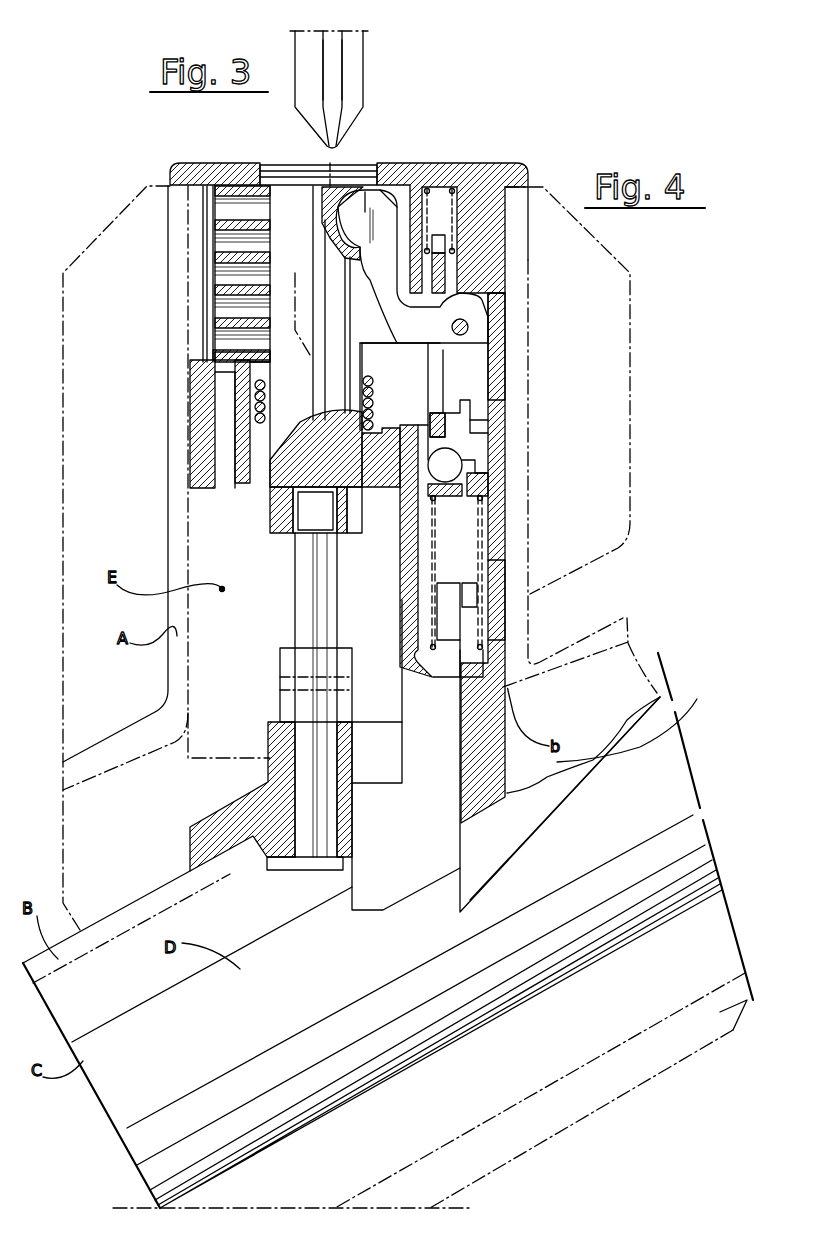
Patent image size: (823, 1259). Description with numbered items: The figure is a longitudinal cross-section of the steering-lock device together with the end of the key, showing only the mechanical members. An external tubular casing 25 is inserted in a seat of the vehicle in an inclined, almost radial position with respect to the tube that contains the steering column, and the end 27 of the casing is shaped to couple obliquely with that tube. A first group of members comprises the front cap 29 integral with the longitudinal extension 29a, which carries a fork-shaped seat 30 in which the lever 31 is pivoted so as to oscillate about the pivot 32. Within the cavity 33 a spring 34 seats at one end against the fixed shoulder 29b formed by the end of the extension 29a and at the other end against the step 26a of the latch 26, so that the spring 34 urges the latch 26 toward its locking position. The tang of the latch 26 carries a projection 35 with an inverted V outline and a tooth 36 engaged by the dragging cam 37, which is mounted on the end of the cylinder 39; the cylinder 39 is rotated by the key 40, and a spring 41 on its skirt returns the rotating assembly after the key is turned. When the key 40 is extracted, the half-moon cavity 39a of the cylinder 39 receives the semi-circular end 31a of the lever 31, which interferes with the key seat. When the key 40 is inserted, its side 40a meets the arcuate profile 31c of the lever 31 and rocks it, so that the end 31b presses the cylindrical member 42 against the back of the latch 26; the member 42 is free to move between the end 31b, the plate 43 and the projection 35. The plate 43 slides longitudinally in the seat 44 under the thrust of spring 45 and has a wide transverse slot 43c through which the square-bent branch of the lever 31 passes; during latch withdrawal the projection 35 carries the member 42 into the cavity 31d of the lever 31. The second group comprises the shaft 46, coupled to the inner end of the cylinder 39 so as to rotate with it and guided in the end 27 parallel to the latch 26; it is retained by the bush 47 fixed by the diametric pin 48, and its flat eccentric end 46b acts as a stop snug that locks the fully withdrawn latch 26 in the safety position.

In FIG. 3, the external tubular casing 25 is at (190, 370).
In FIG. 4, the latch 26 is at (440, 857).
In FIG. 4, the step 26a is at (473, 660).
In FIG. 4, the end of casing 27 is at (610, 705).
In FIG. 3, the front cap 29 is at (170, 173).
In FIG. 3, the longitudinal extension 29a is at (500, 302).
In FIG. 3, the fixed shoulder 29b is at (460, 498).
In FIG. 3, the fork-shaped seat 30 is at (480, 486).
In FIG. 3, the lever 31 is at (470, 318).
In FIG. 3, the semi-circular end of lever 31a is at (392, 200).
In FIG. 3, the end of lever 31b is at (477, 415).
In FIG. 3, the arcuated profile 31c is at (367, 210).
In FIG. 3, the cavity of lever 31d is at (490, 431).
In FIG. 3, the pivot 32 is at (465, 331).
In FIG. 3, the cavity 33 is at (473, 661).
In FIG. 3, the spring 34 is at (480, 592).
In FIG. 3, the projection 35 is at (427, 517).
In FIG. 3, the tooth 36 is at (407, 441).
In FIG. 3, the dragging cam 37 is at (243, 447).
In FIG. 3, the cylinder 39 is at (272, 500).
In FIG. 3, the cavity of cylinder 39a is at (323, 203).
In FIG. 3, the key 40 is at (358, 106).
In FIG. 3, the side of key 40a is at (363, 52).
In FIG. 3, the spring 41 is at (253, 401).
In FIG. 3, the cylindrical member 42 is at (455, 466).
In FIG. 3, the plate 43 is at (453, 248).
In FIG. 3, the transverse slot 43c is at (445, 390).
In FIG. 3, the seat 44 is at (447, 277).
In FIG. 3, the spring 45 is at (437, 197).
In FIG. 3, the shaft 46 is at (303, 614).
In FIG. 3, the end of shaft 46b is at (277, 864).
In FIG. 3, the retaining bush 47 is at (280, 664).
In FIG. 3, the diametric pin 48 is at (315, 689).